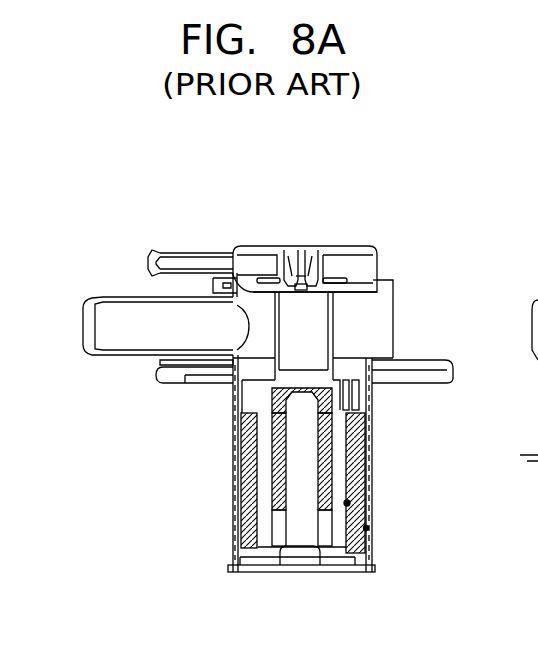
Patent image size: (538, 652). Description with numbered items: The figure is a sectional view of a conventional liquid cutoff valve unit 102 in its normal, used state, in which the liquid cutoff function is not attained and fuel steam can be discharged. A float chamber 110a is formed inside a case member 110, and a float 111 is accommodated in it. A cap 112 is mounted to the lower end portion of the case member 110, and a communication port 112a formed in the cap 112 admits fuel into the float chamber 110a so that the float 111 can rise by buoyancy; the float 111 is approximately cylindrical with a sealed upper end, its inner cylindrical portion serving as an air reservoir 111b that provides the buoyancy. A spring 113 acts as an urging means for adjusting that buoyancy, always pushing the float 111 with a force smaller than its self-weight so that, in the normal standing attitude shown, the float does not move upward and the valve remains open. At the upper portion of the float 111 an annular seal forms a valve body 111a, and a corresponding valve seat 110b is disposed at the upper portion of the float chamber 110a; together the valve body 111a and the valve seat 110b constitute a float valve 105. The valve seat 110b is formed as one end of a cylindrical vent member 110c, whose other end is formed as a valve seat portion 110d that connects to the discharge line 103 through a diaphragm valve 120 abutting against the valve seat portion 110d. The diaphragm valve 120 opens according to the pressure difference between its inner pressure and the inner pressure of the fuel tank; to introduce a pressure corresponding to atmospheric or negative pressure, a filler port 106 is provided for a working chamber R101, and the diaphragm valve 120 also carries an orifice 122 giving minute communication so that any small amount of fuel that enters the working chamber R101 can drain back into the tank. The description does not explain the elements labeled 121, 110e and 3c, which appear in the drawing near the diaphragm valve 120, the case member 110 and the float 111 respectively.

The cutoff valve unit 102 is at (397, 154).
The diaphragm valve 120 is at (350, 271).
The orifice 122 is at (305, 255).
The valve stem 121 is at (291, 255).
The working chamber R101 is at (258, 278).
The filler port 106 is at (190, 253).
The discharge line 103 is at (160, 350).
The case member 110 is at (372, 477).
The valve seat portion 110d is at (378, 280).
The cylindrical vent member 110c is at (331, 318).
The valve seat 110b is at (378, 357).
The housing terminal flange 110e is at (372, 410).
The float valve 105 is at (271, 379).
The valve body 111a is at (333, 387).
The spring 113 is at (270, 518).
The float 111 is at (362, 440).
The bore 3c is at (268, 466).
The air reservoir 111b is at (348, 503).
The float chamber 110a is at (366, 528).
The cap 112 is at (352, 567).
The communication port 112a is at (297, 550).